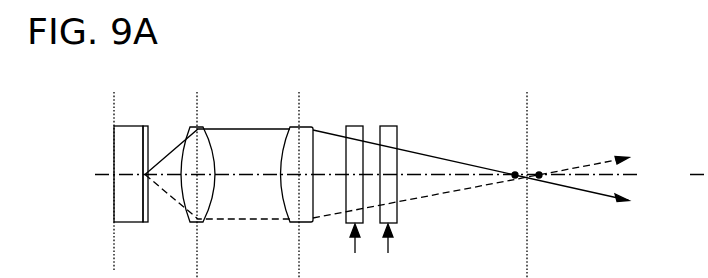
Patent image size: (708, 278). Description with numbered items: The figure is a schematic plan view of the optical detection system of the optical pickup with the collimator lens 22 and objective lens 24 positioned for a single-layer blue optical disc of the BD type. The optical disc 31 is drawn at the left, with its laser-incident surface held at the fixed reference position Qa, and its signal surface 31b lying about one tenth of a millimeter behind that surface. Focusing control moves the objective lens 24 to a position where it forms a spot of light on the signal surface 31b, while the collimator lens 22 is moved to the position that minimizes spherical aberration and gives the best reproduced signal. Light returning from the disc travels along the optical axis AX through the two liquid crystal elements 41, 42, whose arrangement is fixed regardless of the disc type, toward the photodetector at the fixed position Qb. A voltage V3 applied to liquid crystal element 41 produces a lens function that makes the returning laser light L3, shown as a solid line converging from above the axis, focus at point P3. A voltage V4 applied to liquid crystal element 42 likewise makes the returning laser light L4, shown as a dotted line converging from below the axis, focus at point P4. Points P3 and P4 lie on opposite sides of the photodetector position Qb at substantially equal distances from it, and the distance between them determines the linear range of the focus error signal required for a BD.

The optical disc 31 is at (120, 131).
The signal surface 31b is at (148, 132).
The objective lens 24 is at (197, 128).
The collimator lens 22 is at (308, 128).
The liquid crystal element 41 is at (358, 130).
The liquid crystal element 42 is at (392, 130).
The optical axis AX is at (422, 173).
The reference position Qa is at (109, 170).
The photodetector position Qb is at (522, 176).
The convergence point P3 is at (514, 172).
The convergence point P4 is at (541, 172).
The returning laser light L3 is at (399, 171).
The returning laser light L4 is at (399, 184).
The voltage V3 is at (351, 251).
The voltage V4 is at (386, 251).